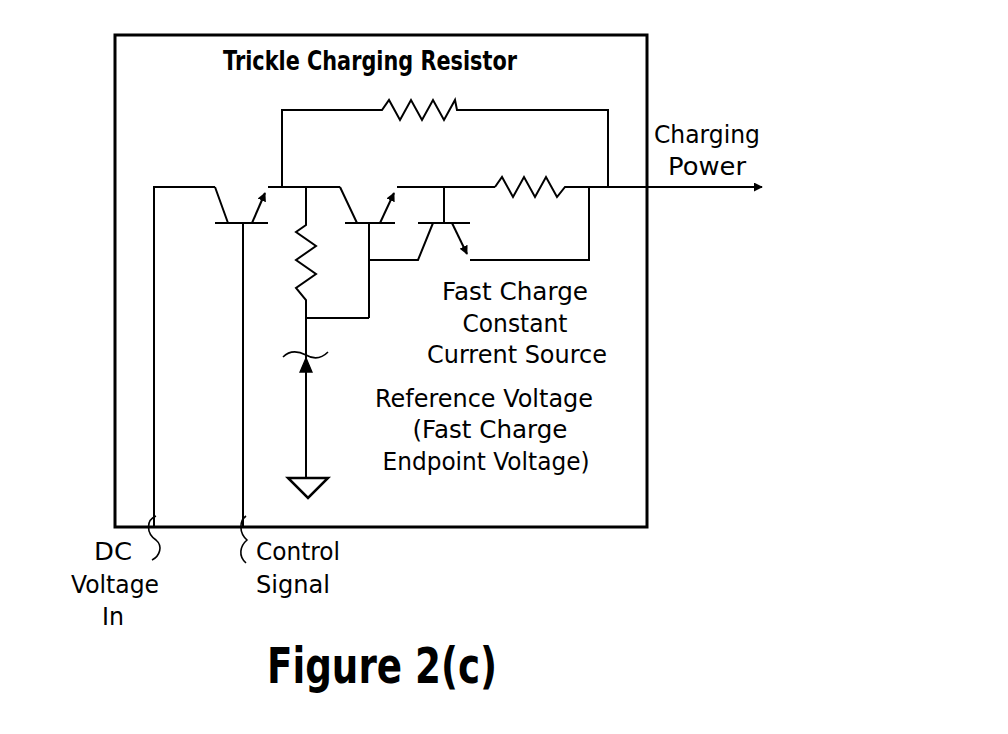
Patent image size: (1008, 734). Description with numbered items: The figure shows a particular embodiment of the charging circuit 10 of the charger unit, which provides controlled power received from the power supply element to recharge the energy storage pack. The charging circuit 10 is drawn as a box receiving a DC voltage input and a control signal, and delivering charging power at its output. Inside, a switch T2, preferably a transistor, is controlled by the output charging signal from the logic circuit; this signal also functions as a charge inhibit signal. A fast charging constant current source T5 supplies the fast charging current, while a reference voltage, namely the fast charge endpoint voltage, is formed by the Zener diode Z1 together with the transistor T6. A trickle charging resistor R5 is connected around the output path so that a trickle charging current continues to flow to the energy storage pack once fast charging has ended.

The charging circuit 10 is at (66, 110).
The switch T2 is at (241, 191).
The transistor T6 is at (367, 239).
The fast charging constant current source T5 is at (479, 233).
The trickle charging resistor R5 is at (445, 143).
The Zener diode Z1 is at (312, 408).